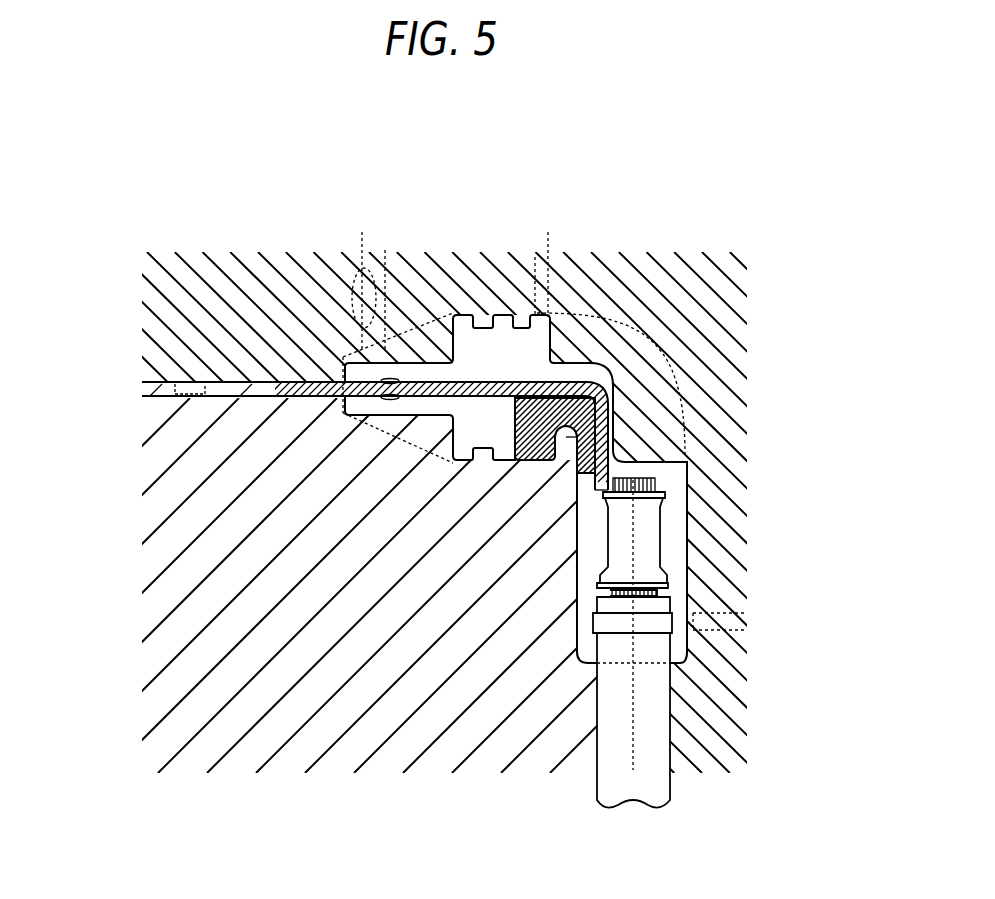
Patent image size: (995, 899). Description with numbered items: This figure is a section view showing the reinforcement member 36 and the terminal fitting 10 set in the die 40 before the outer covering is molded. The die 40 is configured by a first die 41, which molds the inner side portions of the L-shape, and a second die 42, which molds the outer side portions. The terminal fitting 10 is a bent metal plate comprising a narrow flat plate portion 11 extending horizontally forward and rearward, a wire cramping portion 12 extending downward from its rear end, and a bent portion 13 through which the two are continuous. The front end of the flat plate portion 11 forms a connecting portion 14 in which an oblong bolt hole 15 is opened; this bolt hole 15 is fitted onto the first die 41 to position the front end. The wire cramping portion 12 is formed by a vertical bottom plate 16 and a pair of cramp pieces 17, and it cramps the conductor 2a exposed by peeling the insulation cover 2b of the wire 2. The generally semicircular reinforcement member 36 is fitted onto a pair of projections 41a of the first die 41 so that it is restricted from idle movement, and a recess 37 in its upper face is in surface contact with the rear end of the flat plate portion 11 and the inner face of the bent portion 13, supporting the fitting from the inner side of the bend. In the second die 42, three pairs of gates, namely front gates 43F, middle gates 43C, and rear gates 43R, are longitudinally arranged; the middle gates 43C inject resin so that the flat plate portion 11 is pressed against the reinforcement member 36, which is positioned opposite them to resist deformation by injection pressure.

The wire 2 is at (696, 630).
The conductor 2a is at (663, 481).
The insulation cover 2b is at (660, 740).
The terminal fitting 10 is at (510, 511).
The flat plate portion 11 is at (430, 382).
The wire cramping portion 12 is at (696, 565).
The bent portion 13 is at (603, 386).
The connecting portion 14 is at (416, 349).
The bolt hole 15 is at (258, 380).
The bottom plate 16 is at (590, 533).
The cramp pieces 17 is at (653, 556).
The reinforcement member 36 is at (528, 462).
The recess 37 is at (565, 386).
The die 40 is at (579, 394).
The first die 41 is at (487, 601).
The projections 41a is at (603, 432).
The second die 42 is at (180, 272).
The middle gates 43C is at (544, 263).
The front gates 43F is at (363, 279).
The rear gates 43R is at (748, 621).